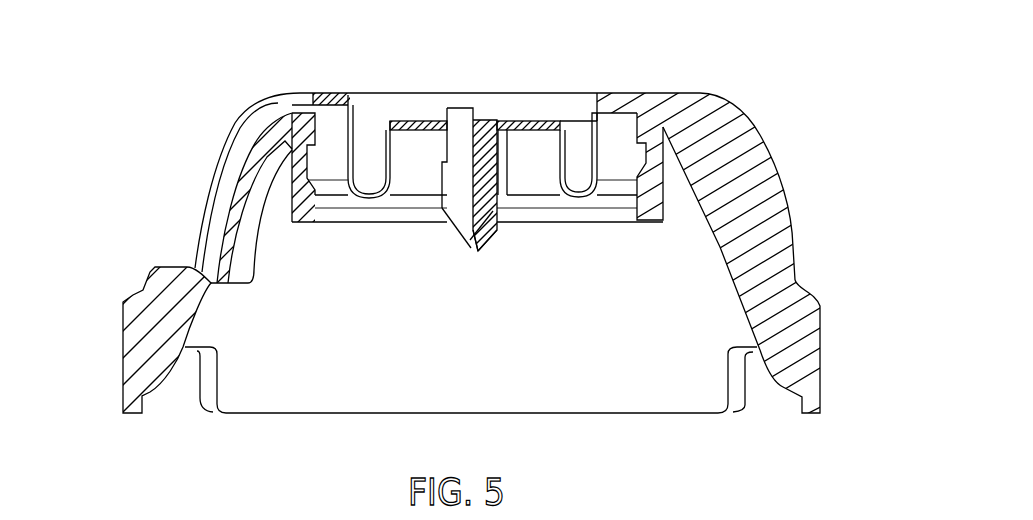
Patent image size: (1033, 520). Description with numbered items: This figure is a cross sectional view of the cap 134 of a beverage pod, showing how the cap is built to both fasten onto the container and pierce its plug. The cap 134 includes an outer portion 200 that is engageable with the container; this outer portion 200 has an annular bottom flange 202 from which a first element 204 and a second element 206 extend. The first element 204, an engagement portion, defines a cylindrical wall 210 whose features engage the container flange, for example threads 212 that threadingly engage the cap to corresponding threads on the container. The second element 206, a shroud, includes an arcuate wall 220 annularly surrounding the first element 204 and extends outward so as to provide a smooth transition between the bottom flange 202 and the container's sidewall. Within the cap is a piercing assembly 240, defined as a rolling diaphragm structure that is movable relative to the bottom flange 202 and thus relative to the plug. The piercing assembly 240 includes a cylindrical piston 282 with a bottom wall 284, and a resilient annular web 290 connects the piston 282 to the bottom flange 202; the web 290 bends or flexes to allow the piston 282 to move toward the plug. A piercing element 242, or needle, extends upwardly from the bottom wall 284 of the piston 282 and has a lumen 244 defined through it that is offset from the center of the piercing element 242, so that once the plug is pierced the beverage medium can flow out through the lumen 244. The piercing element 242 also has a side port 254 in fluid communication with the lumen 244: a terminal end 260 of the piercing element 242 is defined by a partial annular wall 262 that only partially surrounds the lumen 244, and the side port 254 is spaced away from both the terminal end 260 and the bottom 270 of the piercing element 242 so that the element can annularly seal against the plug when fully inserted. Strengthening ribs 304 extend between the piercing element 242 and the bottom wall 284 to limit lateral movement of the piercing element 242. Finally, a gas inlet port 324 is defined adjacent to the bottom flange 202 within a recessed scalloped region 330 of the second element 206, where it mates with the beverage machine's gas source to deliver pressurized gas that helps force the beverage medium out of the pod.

The cap 134 is at (749, 48).
The outer portion 200 is at (143, 303).
The recessed scalloped region 330 is at (222, 225).
The gas inlet port 324 is at (297, 97).
The piercing assembly 240 is at (357, 91).
The cylindrical wall 210 is at (300, 188).
The threads 212 is at (342, 202).
The resilient annular web 290 is at (382, 150).
The cylindrical piston 282 is at (422, 110).
The bottom wall 284 is at (544, 123).
The bottom 270 is at (475, 211).
The side port 254 is at (447, 183).
The lumen 244 is at (469, 242).
The piercing element 242 is at (490, 237).
The partial annular wall 262 is at (500, 212).
The terminal end 260 is at (480, 252).
The strengthening ribs 304 is at (510, 138).
The arcuate wall 220 is at (773, 158).
The annular bottom flange 202 is at (640, 108).
The first element 204 is at (658, 192).
The second element 206 is at (810, 310).